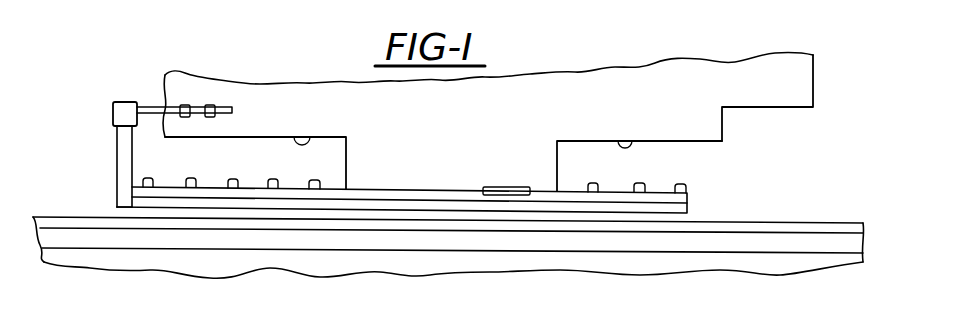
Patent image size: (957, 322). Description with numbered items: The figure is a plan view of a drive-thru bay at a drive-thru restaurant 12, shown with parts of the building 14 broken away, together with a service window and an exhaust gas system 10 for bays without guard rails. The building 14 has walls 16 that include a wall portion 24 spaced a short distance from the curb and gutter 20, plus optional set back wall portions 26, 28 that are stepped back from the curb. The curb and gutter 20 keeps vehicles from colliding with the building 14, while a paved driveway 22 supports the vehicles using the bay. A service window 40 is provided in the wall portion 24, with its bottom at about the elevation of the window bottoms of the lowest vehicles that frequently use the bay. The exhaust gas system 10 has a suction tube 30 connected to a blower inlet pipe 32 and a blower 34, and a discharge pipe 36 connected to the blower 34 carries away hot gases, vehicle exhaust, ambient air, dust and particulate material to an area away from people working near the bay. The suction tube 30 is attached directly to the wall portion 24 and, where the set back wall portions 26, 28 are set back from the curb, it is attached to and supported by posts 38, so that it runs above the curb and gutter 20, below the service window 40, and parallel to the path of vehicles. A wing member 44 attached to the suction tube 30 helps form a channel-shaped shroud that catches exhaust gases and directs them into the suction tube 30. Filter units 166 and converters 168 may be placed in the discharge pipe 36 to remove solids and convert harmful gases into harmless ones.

The exhaust gas system 10 is at (97, 148).
The drive-thru restaurant 12 is at (517, 95).
The building 14 is at (764, 134).
The walls 16 is at (795, 107).
The curb and gutter 20 is at (93, 238).
The paved driveway 22 is at (177, 258).
The wall portion 24 is at (426, 182).
The set back wall portion 26 is at (314, 137).
The set back wall portion 28 is at (626, 141).
The suction tube 30 is at (687, 198).
The blower inlet pipe 32 is at (117, 171).
The blower 34 is at (113, 118).
The discharge pipe 36 is at (145, 103).
The posts 38 is at (142, 182).
The service window 40 is at (486, 186).
The wing member 44 is at (687, 205).
The filter units 166 is at (182, 105).
The converters 168 is at (208, 105).